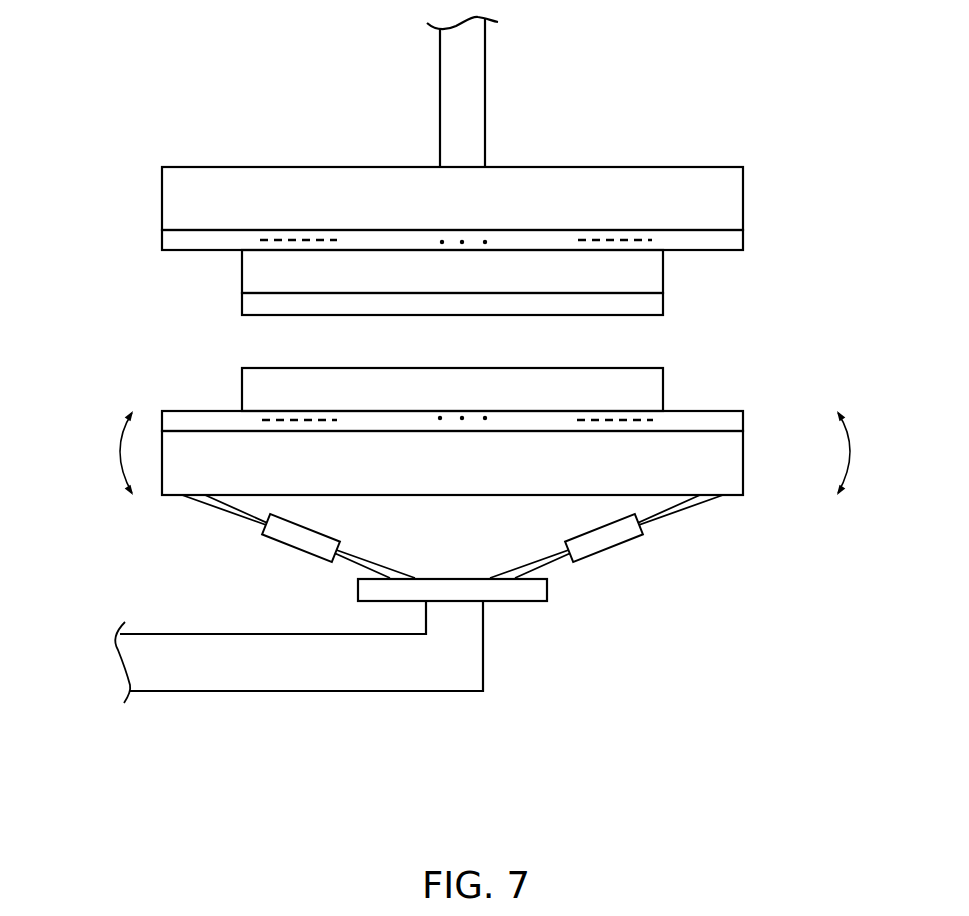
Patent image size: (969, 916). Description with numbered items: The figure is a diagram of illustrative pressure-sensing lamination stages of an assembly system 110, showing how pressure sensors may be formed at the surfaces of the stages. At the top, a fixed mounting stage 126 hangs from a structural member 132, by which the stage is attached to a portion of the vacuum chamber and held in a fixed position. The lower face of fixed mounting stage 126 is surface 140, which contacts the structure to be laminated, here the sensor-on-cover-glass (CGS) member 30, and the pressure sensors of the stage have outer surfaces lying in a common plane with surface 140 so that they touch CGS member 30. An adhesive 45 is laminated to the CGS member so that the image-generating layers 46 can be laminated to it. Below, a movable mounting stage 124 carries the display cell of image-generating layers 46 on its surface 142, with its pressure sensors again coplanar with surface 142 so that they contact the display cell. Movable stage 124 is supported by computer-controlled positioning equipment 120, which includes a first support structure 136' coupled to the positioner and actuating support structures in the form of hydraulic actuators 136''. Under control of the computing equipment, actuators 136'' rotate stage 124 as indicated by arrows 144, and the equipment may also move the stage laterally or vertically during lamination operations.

The display system 110 is at (197, 42).
The structural member 132 is at (478, 100).
The fixed mounting stage 126 is at (737, 200).
The surface 140 is at (207, 253).
The sensor-on-cover-glass (CGS) member 30 is at (655, 278).
The adhesive 45 is at (655, 303).
The image-generating layers 46 is at (655, 390).
The surface 142 is at (206, 410).
The movable mounting stage 124 is at (737, 461).
The arrows 144 is at (115, 452).
The computer-controlled positioning equipment 120 is at (459, 622).
The hydraulic actuators 136'' is at (452, 557).
The first support structure 136' is at (299, 675).